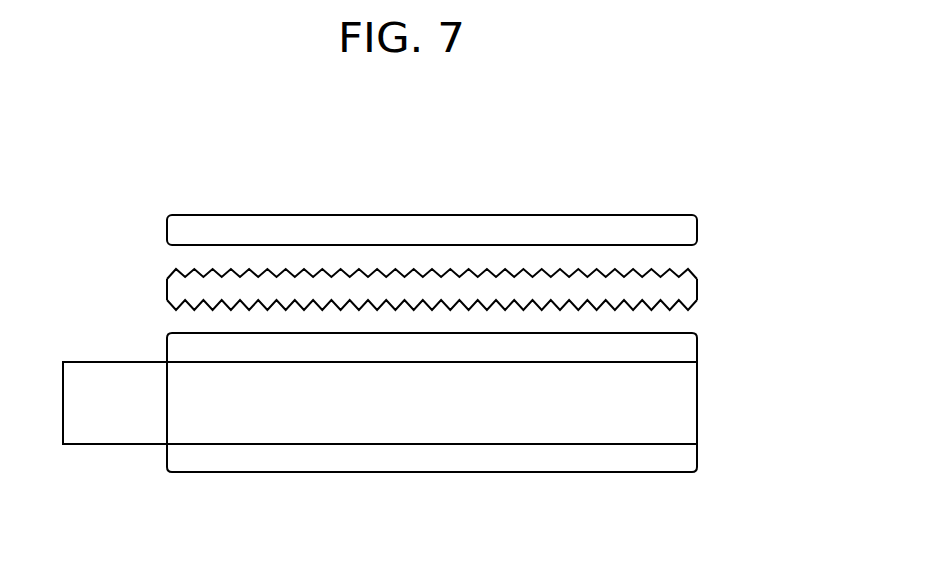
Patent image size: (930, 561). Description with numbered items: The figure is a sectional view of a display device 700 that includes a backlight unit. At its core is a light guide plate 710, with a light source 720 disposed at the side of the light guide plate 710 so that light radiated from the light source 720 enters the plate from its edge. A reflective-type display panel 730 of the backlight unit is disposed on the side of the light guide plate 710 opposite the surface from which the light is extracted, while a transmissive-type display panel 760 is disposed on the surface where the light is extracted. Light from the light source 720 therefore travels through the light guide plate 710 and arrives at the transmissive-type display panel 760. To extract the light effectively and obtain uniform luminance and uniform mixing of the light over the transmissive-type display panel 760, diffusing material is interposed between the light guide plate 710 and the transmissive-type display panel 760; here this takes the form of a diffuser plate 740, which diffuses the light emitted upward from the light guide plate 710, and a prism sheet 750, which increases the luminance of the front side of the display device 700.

The display device 700 is at (167, 118).
The light guide plate 710 is at (694, 400).
The light source 720 is at (105, 372).
The reflective-type display panel 730 is at (694, 458).
The diffuser plate 740 is at (694, 350).
The prism sheet 750 is at (697, 288).
The transmissive-type display panel 760 is at (694, 231).